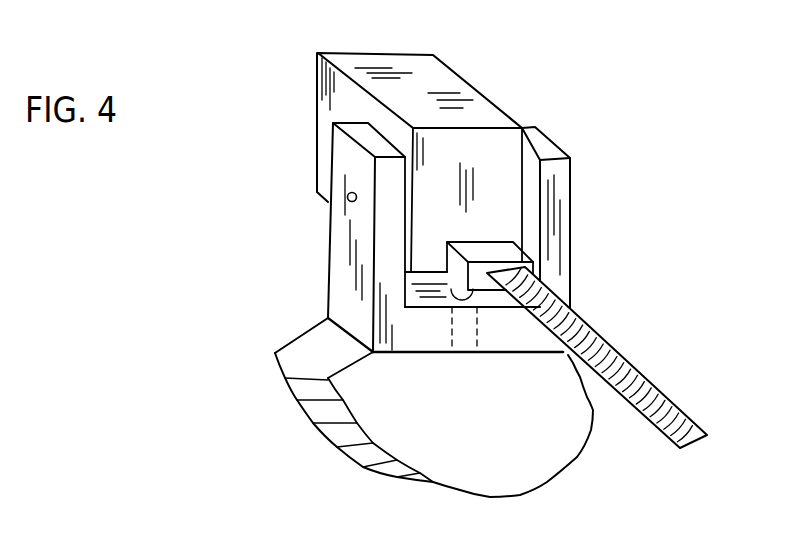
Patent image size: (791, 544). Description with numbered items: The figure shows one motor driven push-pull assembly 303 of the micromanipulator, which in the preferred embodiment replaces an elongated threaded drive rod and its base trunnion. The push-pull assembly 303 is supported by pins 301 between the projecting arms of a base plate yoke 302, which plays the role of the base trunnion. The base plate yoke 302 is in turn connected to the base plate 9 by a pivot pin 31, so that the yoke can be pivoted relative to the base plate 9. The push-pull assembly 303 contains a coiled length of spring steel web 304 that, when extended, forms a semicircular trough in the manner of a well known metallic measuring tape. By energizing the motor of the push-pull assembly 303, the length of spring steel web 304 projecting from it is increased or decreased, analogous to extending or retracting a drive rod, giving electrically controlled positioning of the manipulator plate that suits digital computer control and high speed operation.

The motor driven push-pull assembly 303 is at (467, 84).
The pin 301 is at (347, 197).
The base plate yoke 302 is at (338, 283).
The pivot pin 31 is at (463, 357).
The spring steel web 304 is at (598, 347).
The base plate 9 is at (533, 472).